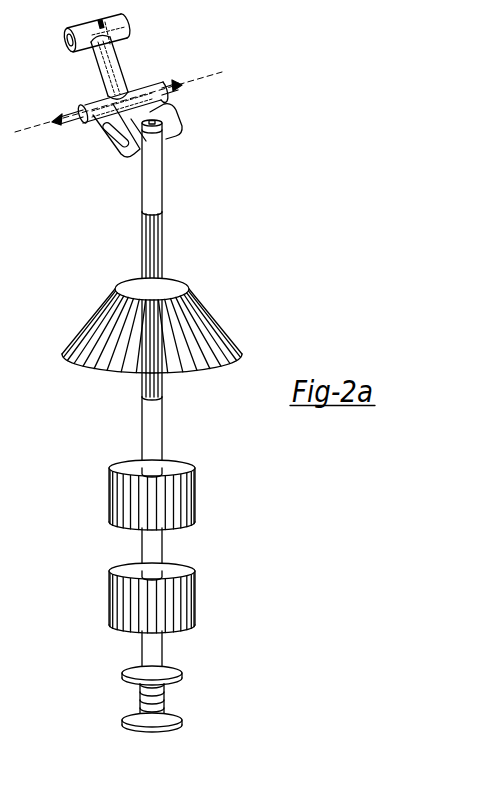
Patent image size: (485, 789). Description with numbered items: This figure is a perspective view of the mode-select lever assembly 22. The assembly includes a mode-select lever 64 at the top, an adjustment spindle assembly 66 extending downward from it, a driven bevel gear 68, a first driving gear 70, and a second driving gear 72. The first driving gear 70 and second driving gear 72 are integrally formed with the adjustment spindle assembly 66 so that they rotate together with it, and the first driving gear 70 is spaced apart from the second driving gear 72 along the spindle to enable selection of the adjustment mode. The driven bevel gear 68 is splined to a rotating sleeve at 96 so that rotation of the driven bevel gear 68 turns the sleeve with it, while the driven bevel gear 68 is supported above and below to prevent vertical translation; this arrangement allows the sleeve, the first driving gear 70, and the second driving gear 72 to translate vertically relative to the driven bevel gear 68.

The mode-select lever assembly 22 is at (249, 227).
The mode-select lever 64 is at (128, 73).
The adjustment spindle assembly 66 is at (165, 187).
The spline 96 is at (156, 250).
The driven bevel gear 68 is at (228, 313).
The second driving gear 72 is at (196, 502).
The first driving gear 70 is at (194, 591).